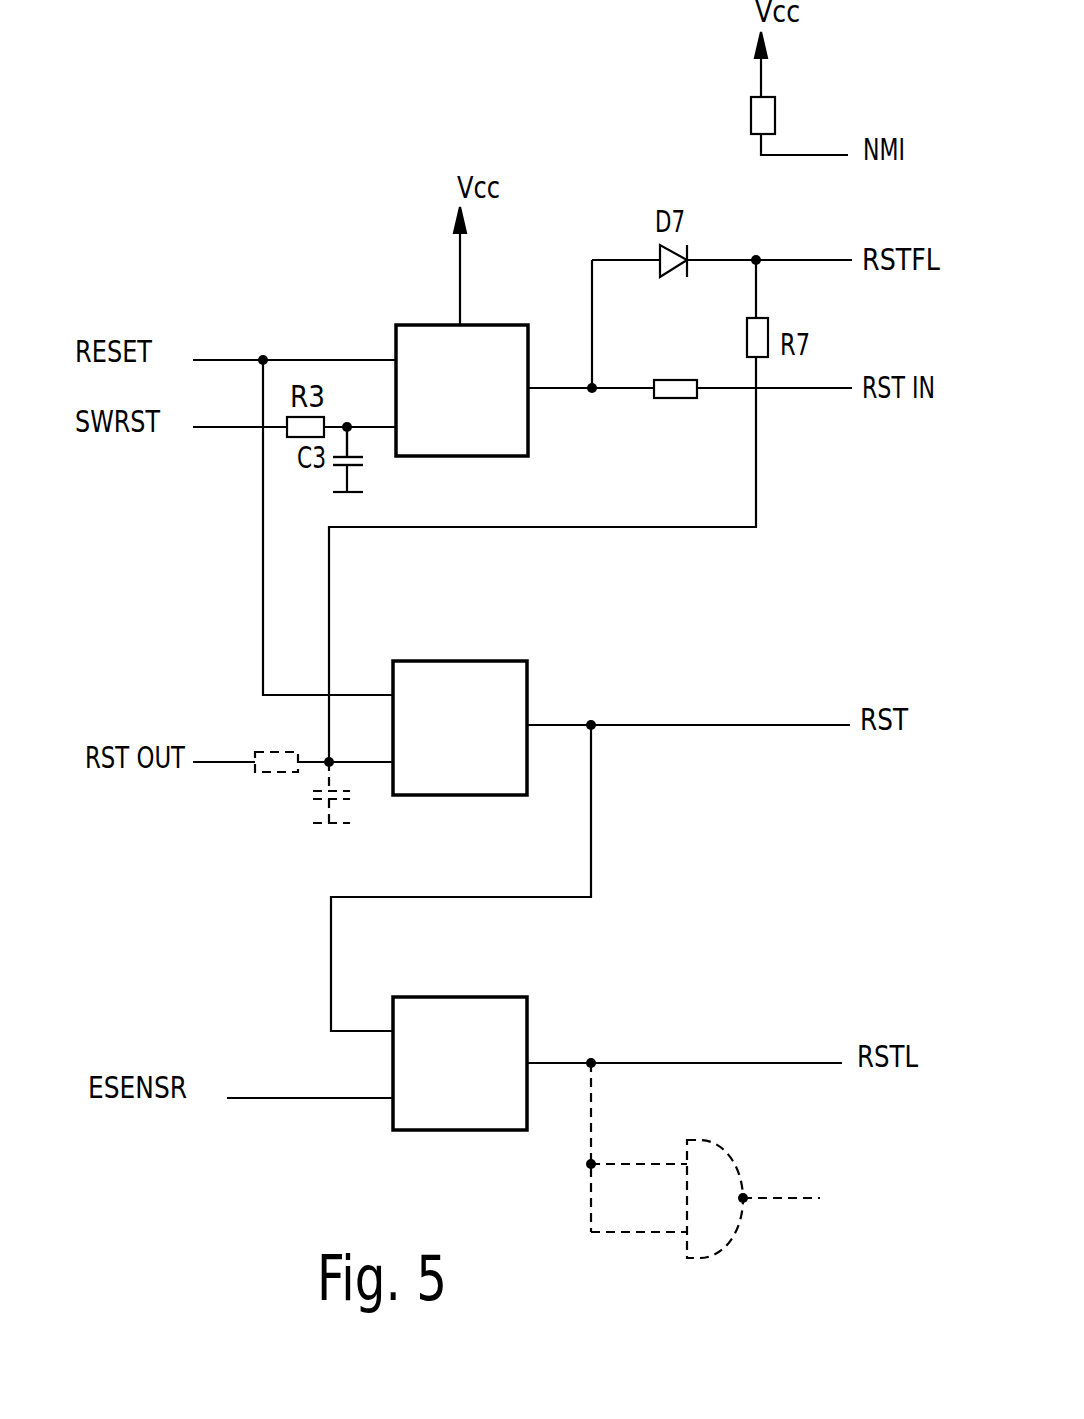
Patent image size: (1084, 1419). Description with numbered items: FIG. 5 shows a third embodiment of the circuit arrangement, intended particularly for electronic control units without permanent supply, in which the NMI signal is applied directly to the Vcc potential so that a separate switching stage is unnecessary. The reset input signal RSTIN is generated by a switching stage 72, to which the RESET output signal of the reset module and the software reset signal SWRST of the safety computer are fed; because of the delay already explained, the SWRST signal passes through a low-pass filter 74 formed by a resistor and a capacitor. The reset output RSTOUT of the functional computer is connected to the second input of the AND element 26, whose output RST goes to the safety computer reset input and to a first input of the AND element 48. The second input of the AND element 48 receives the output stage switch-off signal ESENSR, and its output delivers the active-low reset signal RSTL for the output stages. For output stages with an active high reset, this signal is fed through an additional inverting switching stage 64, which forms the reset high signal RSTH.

The switching stage 72 is at (482, 418).
The AND element 26 is at (480, 764).
The AND element 48 is at (483, 1098).
The low-pass filter 74 is at (321, 477).
The inverting switching stage 64 is at (814, 1206).